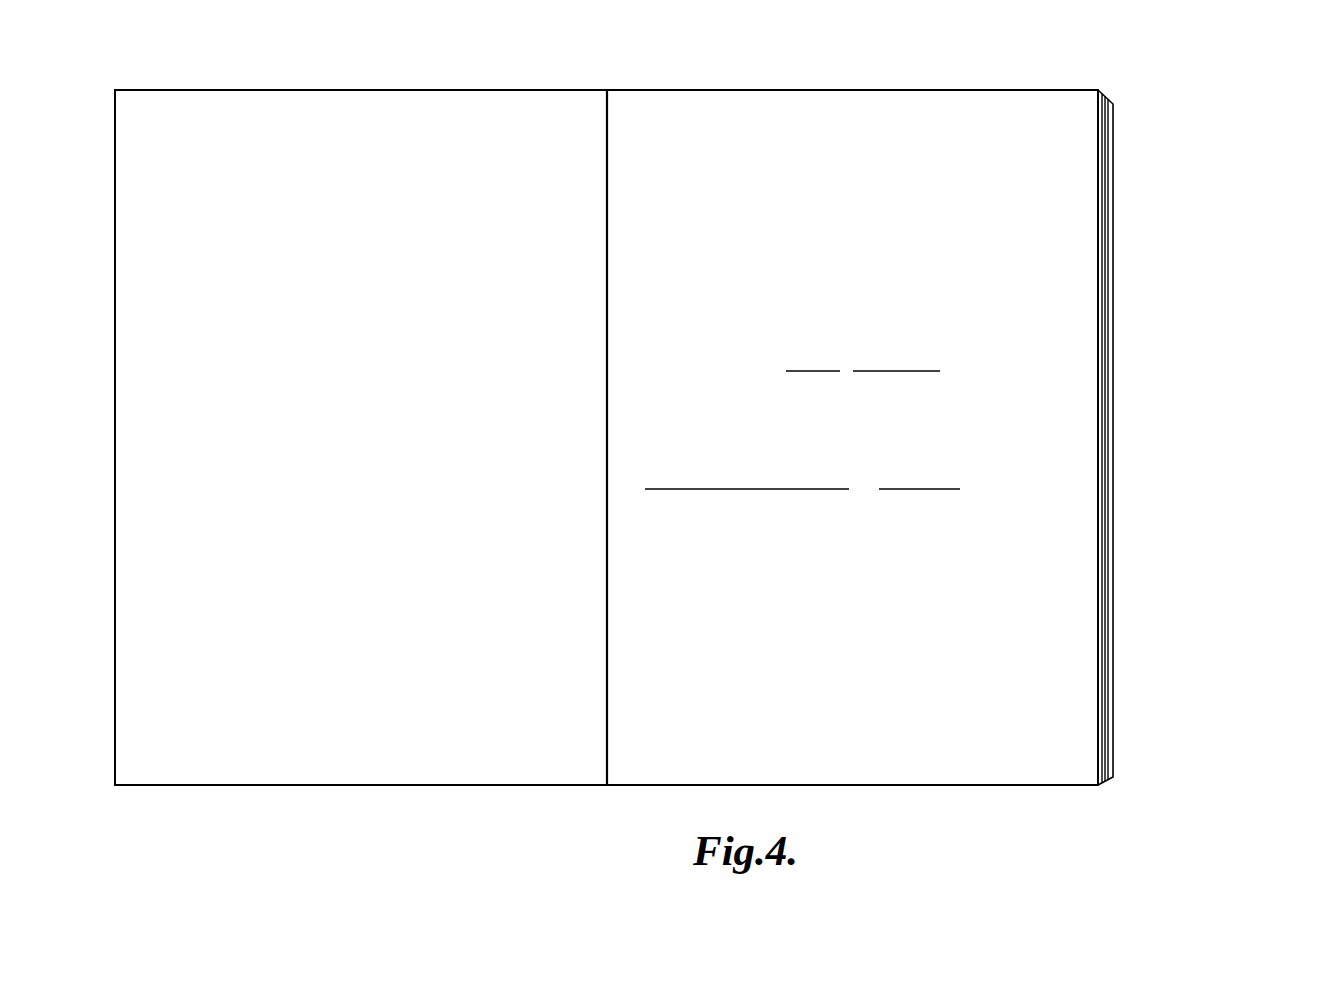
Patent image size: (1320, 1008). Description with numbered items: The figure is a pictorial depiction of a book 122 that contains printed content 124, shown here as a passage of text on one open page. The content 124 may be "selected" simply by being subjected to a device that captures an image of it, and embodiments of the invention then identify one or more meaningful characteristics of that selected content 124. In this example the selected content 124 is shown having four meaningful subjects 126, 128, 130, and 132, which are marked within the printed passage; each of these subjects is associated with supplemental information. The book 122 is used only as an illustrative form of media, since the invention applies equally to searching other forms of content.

The book 122 is at (1236, 95).
The printed content 124 is at (961, 411).
The meaningful subject 126 is at (803, 345).
The meaningful subject 128 is at (890, 347).
The meaningful subject 130 is at (772, 495).
The meaningful subject 132 is at (922, 493).